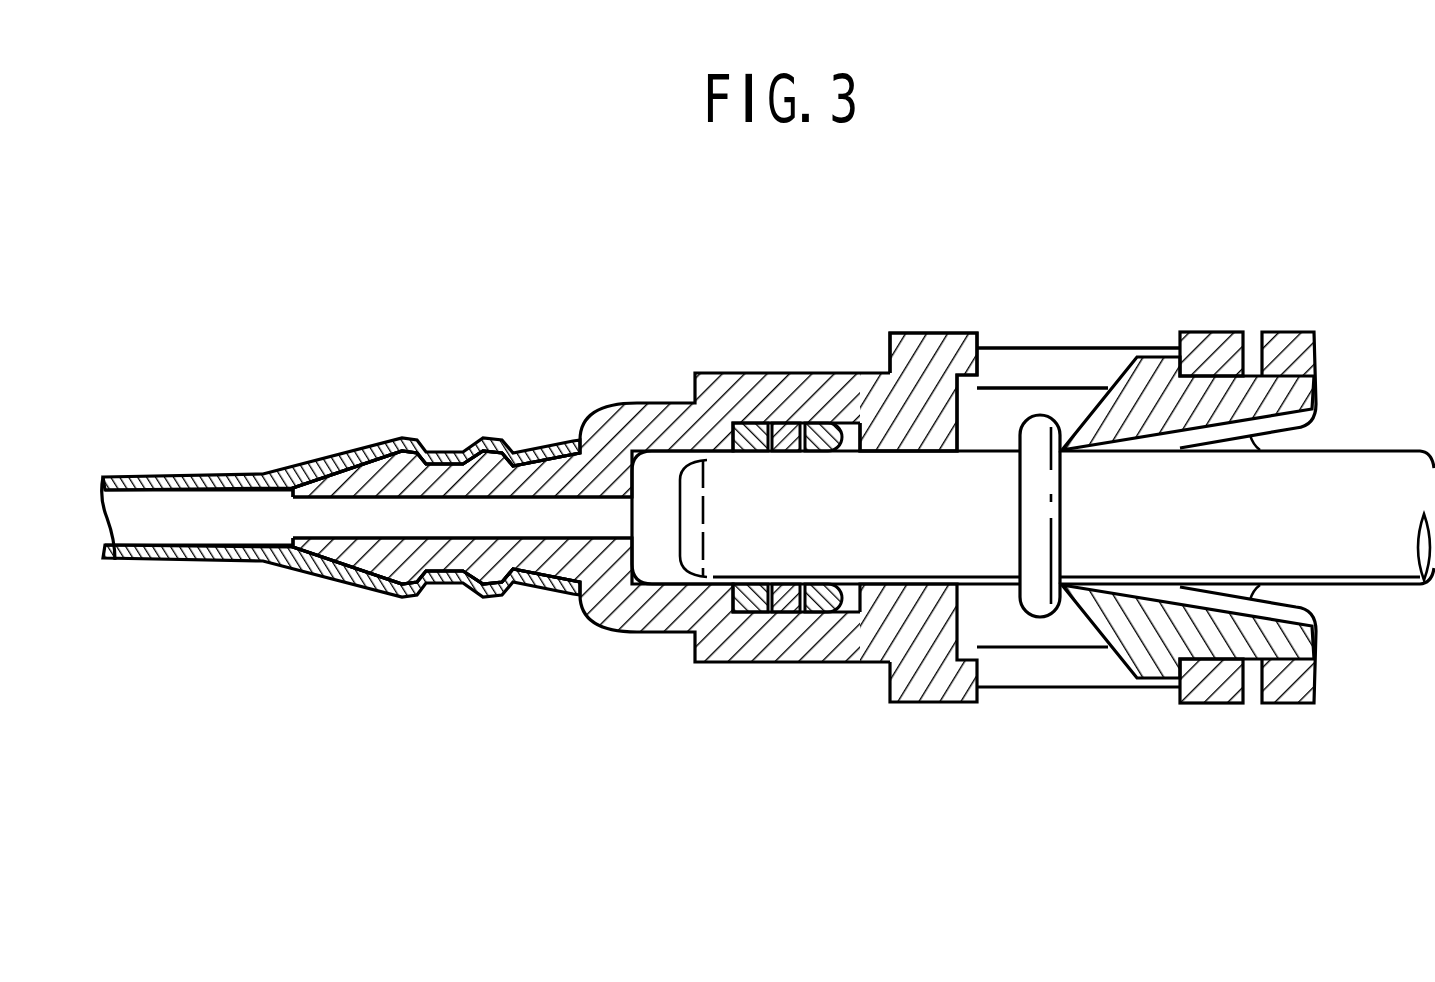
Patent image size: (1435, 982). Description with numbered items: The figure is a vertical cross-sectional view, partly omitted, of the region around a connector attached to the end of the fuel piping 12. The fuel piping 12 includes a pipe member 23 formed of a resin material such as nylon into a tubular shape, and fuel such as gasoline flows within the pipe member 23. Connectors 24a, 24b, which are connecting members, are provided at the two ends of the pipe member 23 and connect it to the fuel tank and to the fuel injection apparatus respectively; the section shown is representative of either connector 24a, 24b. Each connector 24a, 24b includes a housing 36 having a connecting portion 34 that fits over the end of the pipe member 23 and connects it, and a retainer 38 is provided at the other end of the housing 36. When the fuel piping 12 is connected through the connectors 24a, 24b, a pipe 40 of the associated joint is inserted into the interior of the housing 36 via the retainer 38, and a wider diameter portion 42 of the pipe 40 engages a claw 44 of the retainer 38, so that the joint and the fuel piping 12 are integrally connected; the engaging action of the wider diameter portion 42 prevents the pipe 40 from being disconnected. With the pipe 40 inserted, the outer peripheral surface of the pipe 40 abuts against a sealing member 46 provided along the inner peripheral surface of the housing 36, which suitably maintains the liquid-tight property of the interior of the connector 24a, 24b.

The fuel piping 12 is at (212, 565).
The pipe member 23 is at (188, 474).
The connecting portion 34 is at (468, 472).
The housing 36 is at (617, 605).
The connector 24a is at (933, 334).
The connector 24b is at (1020, 392).
The retainer 38 is at (1317, 347).
The pipe 40 is at (1372, 553).
The wider diameter portion 42 is at (1040, 602).
The claw 44 is at (1073, 428).
The sealing member 46 is at (752, 610).